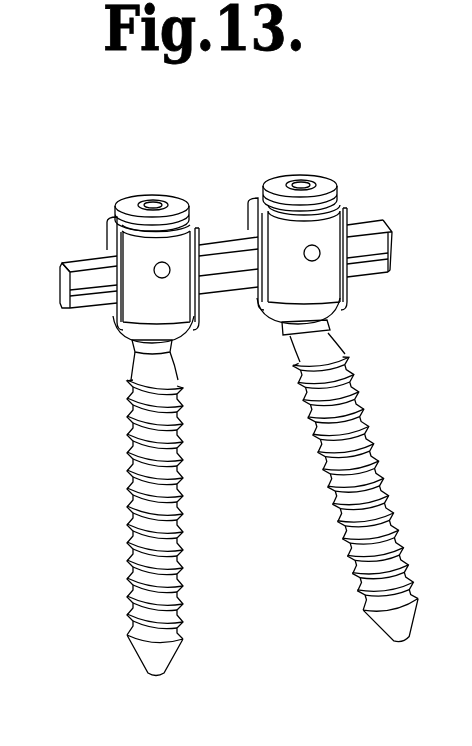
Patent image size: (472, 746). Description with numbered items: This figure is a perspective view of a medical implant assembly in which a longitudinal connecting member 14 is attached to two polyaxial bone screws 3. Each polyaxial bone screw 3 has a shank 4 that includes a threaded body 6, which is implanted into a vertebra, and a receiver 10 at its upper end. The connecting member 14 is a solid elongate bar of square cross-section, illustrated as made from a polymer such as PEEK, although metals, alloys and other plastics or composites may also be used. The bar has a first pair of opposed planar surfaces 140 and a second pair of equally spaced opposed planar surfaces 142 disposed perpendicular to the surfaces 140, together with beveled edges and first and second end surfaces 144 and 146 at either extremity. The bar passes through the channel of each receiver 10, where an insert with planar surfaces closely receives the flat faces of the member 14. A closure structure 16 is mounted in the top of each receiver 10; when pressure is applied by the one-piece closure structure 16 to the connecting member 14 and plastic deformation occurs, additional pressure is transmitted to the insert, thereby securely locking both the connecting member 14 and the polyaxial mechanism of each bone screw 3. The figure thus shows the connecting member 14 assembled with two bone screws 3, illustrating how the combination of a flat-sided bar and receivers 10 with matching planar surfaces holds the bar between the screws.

The longitudinal connecting member 14 is at (365, 221).
The first pair of opposed planar surfaces 140 is at (76, 266).
The second pair of opposed planar surfaces 142 is at (392, 276).
The first end surface 144 is at (62, 288).
The second end surface 146 is at (396, 248).
The closure structure 16 is at (172, 197).
The polyaxial bone screw 3 is at (193, 328).
The receiver 10 is at (109, 318).
The shank 4 is at (128, 384).
The threaded body 6 is at (130, 485).